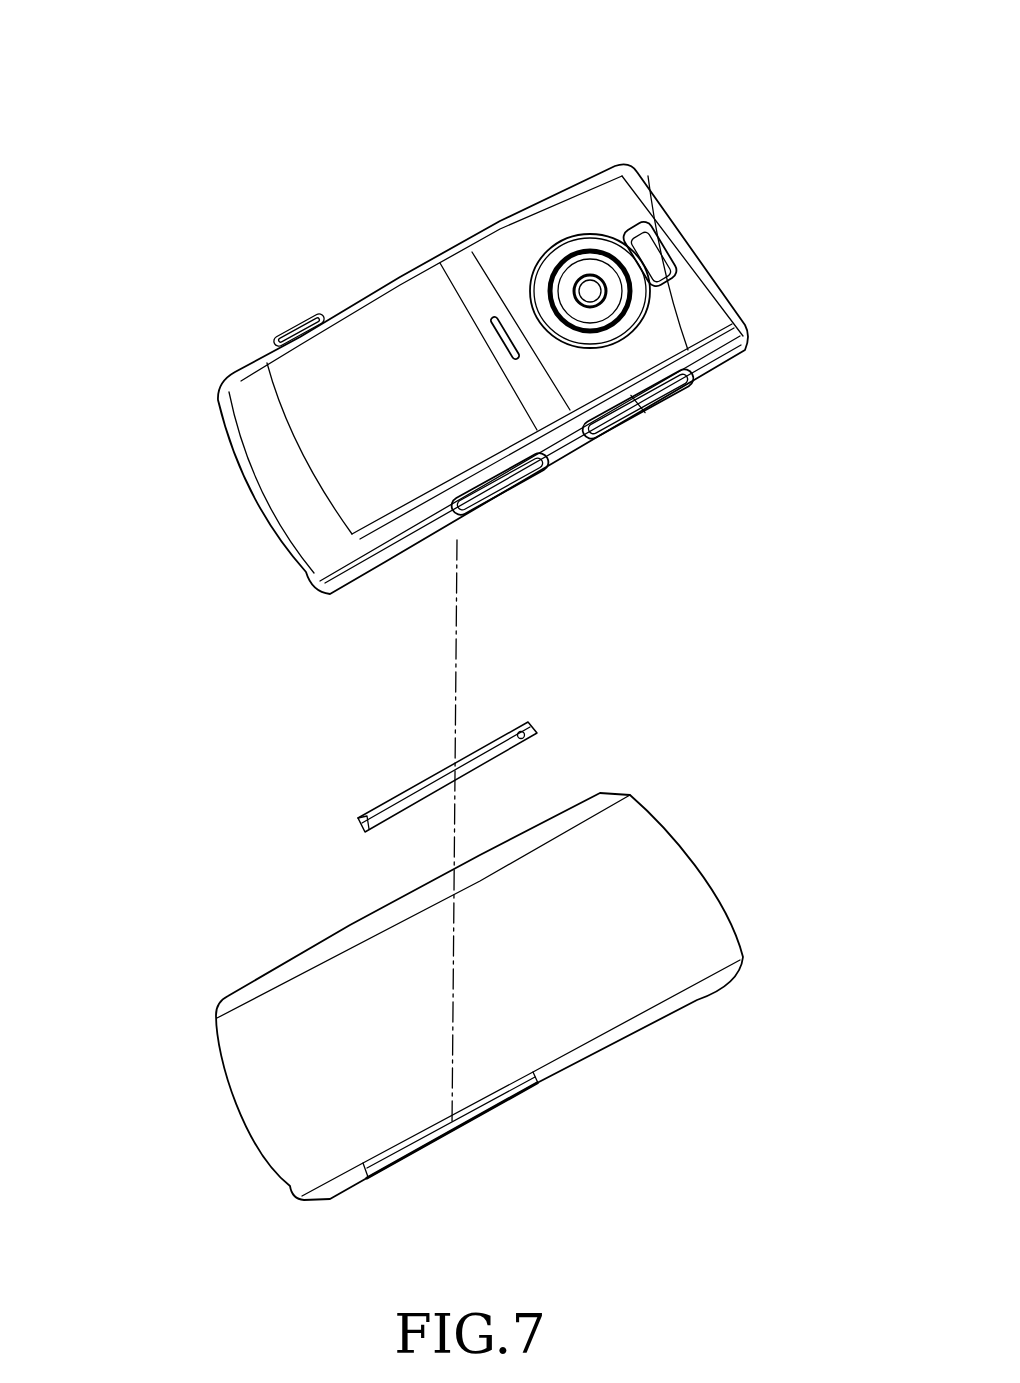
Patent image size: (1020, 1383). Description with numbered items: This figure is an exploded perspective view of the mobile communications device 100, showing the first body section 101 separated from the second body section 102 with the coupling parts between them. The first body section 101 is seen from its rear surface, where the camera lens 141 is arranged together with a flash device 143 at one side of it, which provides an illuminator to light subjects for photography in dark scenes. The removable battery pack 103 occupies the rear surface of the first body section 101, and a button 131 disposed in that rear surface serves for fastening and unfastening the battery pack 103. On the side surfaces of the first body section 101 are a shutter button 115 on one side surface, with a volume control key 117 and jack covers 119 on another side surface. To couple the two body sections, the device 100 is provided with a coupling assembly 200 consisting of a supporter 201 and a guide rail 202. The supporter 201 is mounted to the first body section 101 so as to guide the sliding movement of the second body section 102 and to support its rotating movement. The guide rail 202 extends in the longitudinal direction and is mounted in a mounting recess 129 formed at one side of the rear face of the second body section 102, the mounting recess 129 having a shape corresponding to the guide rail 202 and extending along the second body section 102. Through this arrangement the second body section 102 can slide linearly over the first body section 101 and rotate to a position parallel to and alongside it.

The mobile communications device 100 is at (231, 30).
The first body section 101 is at (362, 277).
The second body section 102 is at (232, 1130).
The battery pack 103 is at (322, 458).
The shutter button 115 is at (292, 330).
The volume control key 117 is at (678, 398).
The jack covers 119 is at (533, 480).
The mounting recess 129 is at (500, 1112).
The button 131 is at (486, 312).
The camera lens 141 is at (588, 290).
The flash device 143 is at (637, 233).
The coupling assembly 200 is at (342, 830).
The supporter 201 is at (532, 722).
The guide rail 202 is at (392, 792).